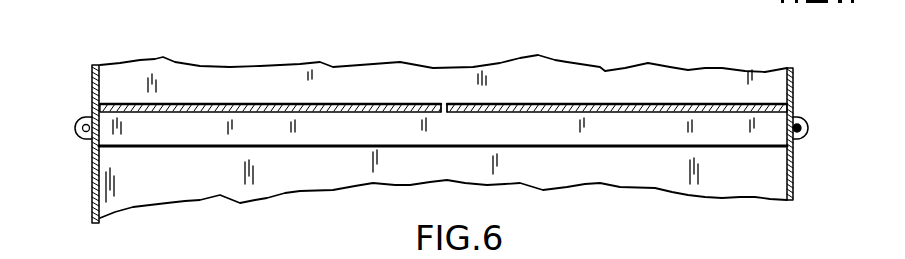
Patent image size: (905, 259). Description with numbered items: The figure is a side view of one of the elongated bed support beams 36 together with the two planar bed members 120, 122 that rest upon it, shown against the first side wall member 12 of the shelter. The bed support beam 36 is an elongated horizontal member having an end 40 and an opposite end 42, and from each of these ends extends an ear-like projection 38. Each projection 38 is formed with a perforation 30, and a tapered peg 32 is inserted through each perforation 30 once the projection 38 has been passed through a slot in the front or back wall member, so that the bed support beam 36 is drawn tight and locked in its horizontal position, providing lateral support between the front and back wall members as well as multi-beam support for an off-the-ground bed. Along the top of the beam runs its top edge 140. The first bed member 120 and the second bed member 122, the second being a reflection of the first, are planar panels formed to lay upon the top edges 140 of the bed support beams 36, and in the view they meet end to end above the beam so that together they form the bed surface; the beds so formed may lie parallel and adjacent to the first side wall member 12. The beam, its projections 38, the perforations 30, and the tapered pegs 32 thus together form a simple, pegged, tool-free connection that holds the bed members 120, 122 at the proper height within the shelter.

The first side wall member 12 is at (452, 75).
The perforation 30 is at (76, 127).
The tapered peg 32 is at (798, 140).
The bed support beam 36 is at (460, 145).
The ear-like projection 38 is at (83, 120).
The end 40 is at (768, 127).
The end 42 is at (110, 136).
The first bed member 120 is at (520, 103).
The second bed member 122 is at (270, 103).
The top edge 140 is at (377, 113).